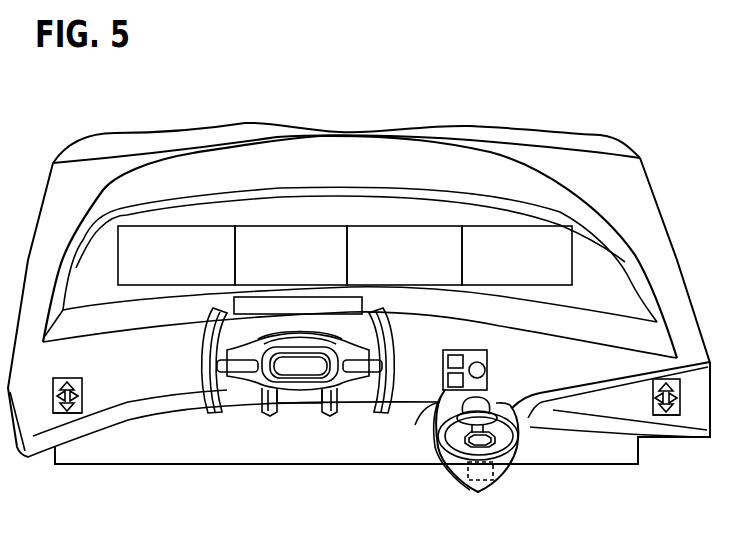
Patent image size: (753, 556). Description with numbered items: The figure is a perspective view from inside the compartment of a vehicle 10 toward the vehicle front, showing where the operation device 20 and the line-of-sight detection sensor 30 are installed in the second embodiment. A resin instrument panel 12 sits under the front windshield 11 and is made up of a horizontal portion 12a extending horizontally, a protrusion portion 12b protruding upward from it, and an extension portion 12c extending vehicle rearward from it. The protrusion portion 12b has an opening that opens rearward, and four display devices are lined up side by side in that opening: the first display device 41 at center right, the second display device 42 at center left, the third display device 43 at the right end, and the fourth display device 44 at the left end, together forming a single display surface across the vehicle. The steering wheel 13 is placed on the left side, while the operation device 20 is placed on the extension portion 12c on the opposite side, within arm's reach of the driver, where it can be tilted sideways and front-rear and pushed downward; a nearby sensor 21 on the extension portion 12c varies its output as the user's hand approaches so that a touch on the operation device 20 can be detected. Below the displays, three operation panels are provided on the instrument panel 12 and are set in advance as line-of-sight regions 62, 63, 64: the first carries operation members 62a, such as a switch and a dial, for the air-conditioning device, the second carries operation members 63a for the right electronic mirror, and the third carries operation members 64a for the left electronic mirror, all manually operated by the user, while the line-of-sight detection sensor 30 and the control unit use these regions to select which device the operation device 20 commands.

The vehicle 10 is at (632, 138).
The front windshield 11 is at (568, 140).
The instrument panel 12 is at (40, 208).
The horizontal portion 12a is at (32, 403).
The protrusion portion 12b is at (138, 200).
The extension portion 12c is at (455, 468).
The steering wheel 13 is at (196, 390).
The operation device 20 is at (519, 436).
The nearby sensor 21 is at (495, 473).
The line-of-sight detection sensor 30 is at (261, 305).
The first display device 41 is at (392, 242).
The second display device 42 is at (318, 240).
The third display device 43 is at (508, 242).
The fourth display device 44 is at (187, 242).
The line-of-sight region 62 is at (443, 362).
The operation members 62a is at (415, 425).
The line-of-sight region 63 is at (682, 416).
The operation members 63a is at (653, 416).
The line-of-sight region 64 is at (53, 413).
The operation members 64a is at (78, 414).